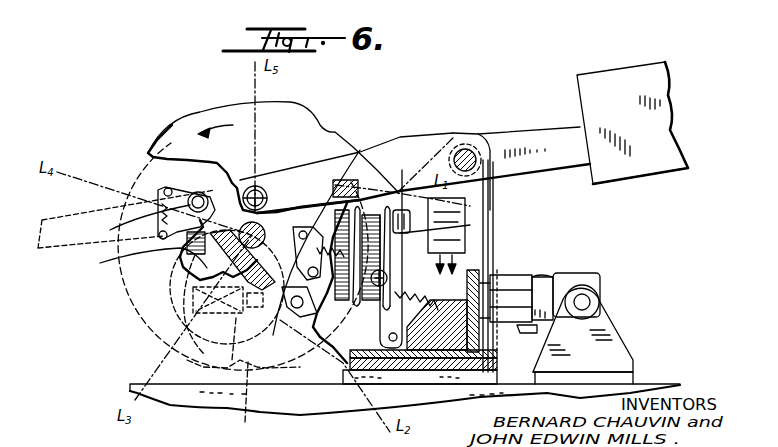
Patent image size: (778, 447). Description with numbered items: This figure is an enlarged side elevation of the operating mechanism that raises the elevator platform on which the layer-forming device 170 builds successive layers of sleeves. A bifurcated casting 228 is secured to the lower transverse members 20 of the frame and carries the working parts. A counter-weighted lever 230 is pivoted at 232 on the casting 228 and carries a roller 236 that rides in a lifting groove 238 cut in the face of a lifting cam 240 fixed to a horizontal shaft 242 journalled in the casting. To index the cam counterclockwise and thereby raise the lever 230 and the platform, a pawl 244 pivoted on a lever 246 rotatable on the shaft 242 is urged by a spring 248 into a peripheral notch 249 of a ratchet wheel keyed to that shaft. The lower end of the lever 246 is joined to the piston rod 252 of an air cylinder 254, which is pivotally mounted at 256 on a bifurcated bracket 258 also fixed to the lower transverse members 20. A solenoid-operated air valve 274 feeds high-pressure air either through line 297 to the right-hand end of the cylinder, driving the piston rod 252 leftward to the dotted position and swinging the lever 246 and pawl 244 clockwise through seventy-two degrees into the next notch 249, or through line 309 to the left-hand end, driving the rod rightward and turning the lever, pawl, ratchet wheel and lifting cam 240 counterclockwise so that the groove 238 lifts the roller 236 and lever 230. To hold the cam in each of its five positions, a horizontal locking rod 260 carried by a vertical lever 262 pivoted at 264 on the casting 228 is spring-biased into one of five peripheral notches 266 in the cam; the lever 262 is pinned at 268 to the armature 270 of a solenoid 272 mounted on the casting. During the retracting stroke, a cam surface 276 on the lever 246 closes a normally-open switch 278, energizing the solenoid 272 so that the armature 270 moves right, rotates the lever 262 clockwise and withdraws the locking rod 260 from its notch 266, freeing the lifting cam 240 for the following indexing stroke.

The lower transverse members 20 is at (197, 397).
The layer-forming device 170 is at (470, 134).
The bifurcated casting 228 is at (495, 245).
The counter-weighted lever 230 is at (420, 150).
The pivot 232 is at (462, 148).
The roller 236 is at (297, 150).
The lifting groove 238 is at (307, 167).
The lifting cam 240 is at (286, 103).
The horizontal shaft 242 is at (210, 253).
The pawl 244 is at (122, 256).
The lever 246 is at (245, 190).
The spring 248 is at (118, 225).
The peripheral notch 249 is at (195, 176).
The piston rod 252 is at (225, 360).
The air cylinder 254 is at (522, 292).
The pivot mounting 256 is at (586, 306).
The bifurcated bracket 258 is at (607, 352).
The horizontal locking rod 260 is at (432, 304).
The vertical lever 262 is at (400, 225).
The pivot 264 is at (395, 350).
The peripheral notches 266 is at (173, 138).
The pin connection 268 is at (465, 220).
The armature 270 is at (470, 206).
The solenoid 272 is at (435, 253).
The solenoid-operated air valve 274 is at (575, 285).
The cam surface 276 is at (300, 338).
The normally-open switch 278 is at (363, 152).
The air line 297 is at (530, 333).
The air line 309 is at (540, 270).